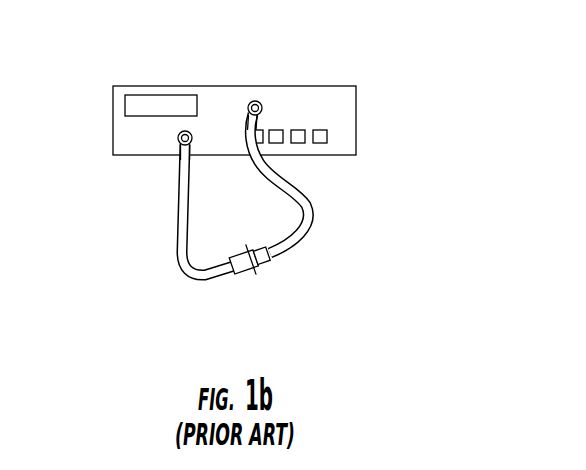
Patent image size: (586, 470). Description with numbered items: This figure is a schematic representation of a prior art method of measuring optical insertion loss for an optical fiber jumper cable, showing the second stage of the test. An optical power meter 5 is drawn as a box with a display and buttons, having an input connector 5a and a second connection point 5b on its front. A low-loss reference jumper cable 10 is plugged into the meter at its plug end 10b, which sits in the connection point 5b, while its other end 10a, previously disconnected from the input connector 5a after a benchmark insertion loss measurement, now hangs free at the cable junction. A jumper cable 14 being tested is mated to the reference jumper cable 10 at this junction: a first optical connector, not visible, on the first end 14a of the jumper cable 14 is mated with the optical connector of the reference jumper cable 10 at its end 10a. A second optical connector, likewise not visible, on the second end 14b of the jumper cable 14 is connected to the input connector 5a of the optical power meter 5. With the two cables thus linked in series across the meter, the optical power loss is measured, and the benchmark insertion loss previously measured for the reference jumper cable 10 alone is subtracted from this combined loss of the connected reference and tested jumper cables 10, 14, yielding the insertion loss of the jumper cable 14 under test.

The optical power meter 5 is at (367, 102).
The input connector 5a is at (250, 104).
The second connector port of console 5b is at (178, 137).
The reference jumper cable 10 is at (172, 258).
The end of reference jumper cable 10a is at (223, 277).
The plug end of first cable 10b is at (181, 150).
The jumper cable being tested 14 is at (316, 198).
The first end of jumper cable 14a is at (292, 247).
The second end of jumper cable 14b is at (254, 125).